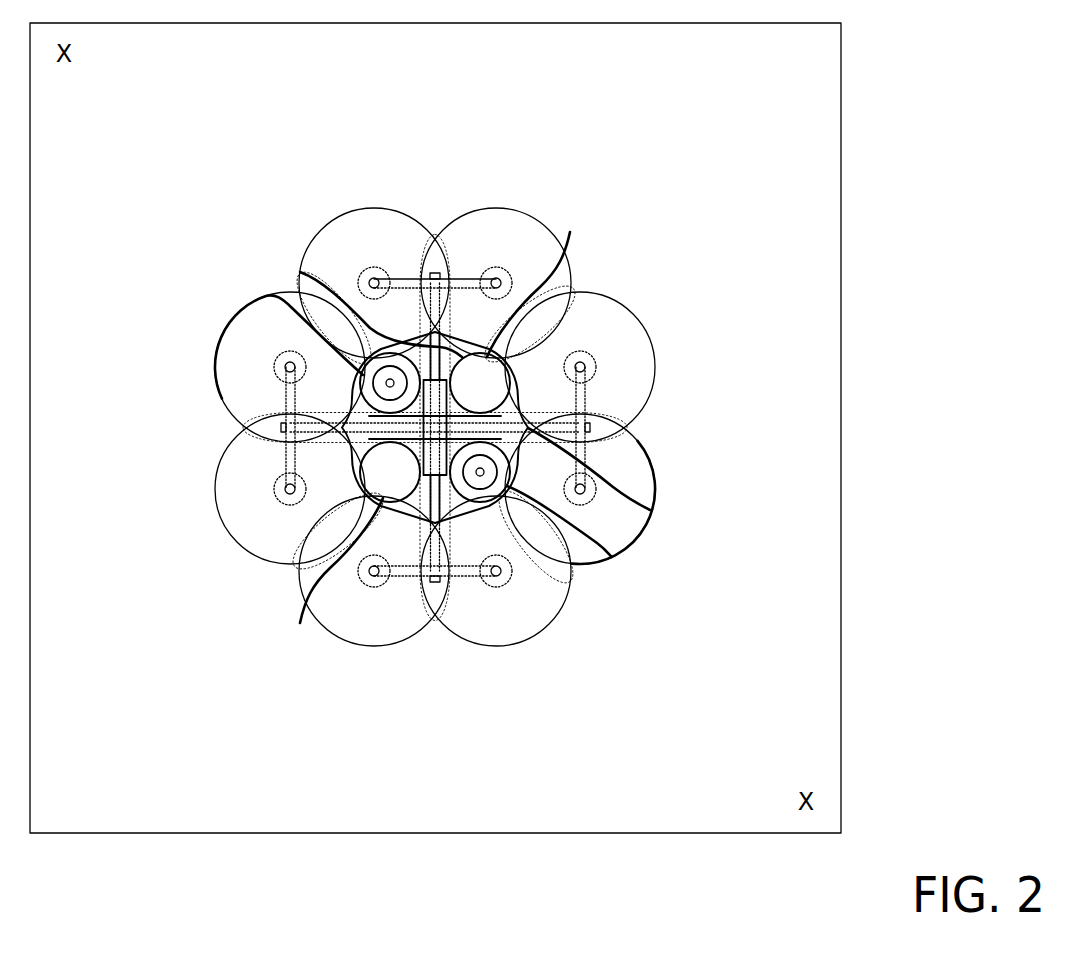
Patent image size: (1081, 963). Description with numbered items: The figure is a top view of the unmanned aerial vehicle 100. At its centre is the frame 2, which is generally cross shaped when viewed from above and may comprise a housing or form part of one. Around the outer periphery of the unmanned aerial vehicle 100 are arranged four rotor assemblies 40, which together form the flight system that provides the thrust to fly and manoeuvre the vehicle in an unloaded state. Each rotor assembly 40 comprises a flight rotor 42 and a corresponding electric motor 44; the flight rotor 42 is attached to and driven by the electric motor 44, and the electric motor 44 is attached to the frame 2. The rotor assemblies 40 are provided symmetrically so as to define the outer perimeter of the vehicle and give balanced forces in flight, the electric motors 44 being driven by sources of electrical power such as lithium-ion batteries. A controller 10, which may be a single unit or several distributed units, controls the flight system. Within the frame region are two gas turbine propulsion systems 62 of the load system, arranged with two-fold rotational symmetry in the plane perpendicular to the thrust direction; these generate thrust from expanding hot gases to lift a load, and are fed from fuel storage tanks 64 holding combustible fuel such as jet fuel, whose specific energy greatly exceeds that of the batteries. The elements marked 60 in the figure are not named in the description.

The frame 2 is at (300, 272).
The controller 10 is at (590, 491).
The rotor assembly 40 is at (313, 150).
The flight rotor 42 is at (336, 240).
The electric motor 44 is at (378, 268).
The coupling body 60 is at (655, 584).
The gas turbine propulsion system 62 is at (260, 300).
The fuel storage tank 64 is at (571, 234).
The unmanned aerial vehicle 100 is at (440, 392).